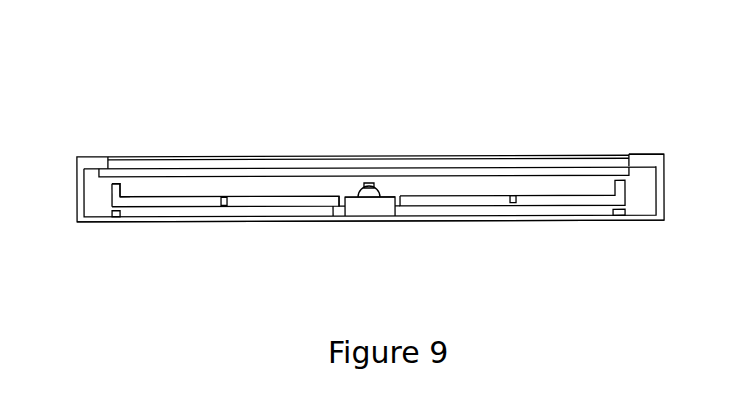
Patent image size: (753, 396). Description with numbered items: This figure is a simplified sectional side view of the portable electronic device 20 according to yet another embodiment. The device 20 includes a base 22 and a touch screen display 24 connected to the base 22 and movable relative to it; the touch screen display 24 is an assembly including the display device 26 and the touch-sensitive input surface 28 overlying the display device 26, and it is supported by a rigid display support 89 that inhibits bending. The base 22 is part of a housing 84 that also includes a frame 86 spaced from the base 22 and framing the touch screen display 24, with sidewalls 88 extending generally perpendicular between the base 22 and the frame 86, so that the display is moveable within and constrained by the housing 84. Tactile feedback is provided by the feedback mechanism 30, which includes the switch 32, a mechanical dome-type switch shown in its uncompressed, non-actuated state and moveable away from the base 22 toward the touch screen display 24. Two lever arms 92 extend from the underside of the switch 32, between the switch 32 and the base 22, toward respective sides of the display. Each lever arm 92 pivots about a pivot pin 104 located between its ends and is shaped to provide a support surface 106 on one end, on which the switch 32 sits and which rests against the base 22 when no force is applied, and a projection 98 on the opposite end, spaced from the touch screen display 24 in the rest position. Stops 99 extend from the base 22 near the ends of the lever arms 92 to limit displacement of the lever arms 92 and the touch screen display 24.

The portable electronic device 20 is at (566, 104).
The base 22 is at (553, 218).
The touch screen display 24 is at (147, 157).
The display device 26 is at (408, 165).
The touch-sensitive input surface 28 is at (484, 158).
The feedback mechanism 30 is at (484, 205).
The switch 32 is at (372, 188).
The housing 84 is at (660, 215).
The frame 86 is at (650, 156).
The sidewalls 88 is at (666, 180).
The display support 89 is at (208, 173).
The lever arms 92 is at (146, 203).
The projection 98 is at (112, 186).
The stops 99 is at (115, 217).
The pivot pin 104 is at (226, 205).
The support surface 106 is at (373, 200).